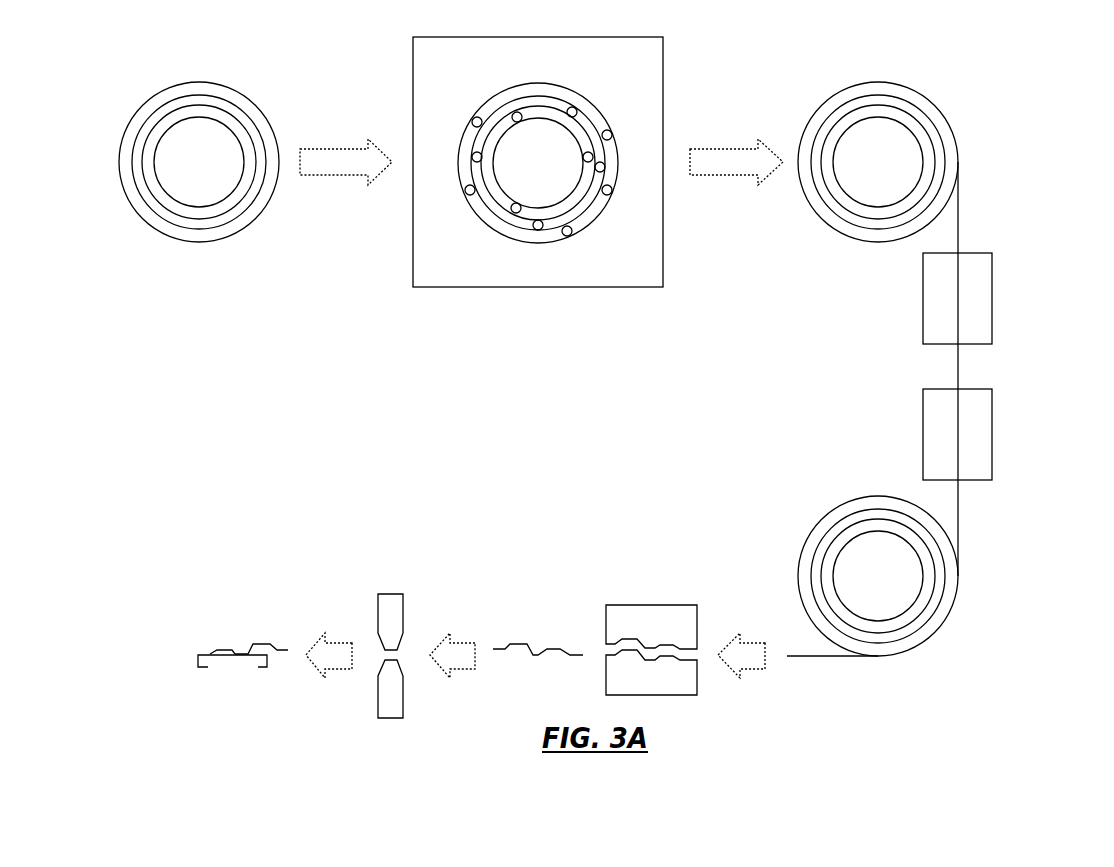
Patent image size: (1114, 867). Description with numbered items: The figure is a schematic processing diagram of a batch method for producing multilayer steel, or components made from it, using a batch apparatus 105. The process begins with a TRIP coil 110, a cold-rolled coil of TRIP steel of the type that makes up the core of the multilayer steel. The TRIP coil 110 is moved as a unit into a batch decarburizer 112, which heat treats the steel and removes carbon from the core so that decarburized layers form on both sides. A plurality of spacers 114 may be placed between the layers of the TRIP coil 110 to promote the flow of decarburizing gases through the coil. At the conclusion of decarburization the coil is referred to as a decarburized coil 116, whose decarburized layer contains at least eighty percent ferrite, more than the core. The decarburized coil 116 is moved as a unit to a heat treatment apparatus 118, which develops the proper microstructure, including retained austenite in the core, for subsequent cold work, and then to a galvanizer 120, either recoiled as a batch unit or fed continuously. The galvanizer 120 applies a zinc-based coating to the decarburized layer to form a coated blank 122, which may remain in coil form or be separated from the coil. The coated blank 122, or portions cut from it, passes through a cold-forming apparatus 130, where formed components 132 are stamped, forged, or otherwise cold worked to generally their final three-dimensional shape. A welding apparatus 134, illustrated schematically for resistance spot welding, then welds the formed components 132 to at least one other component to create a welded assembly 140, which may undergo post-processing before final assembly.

The batch apparatus 105 is at (1014, 97).
The TRIP coil 110 is at (167, 232).
The batch decarburizer 112 is at (612, 290).
The spacers 114 is at (471, 195).
The decarburized coil 116 is at (848, 235).
The heat treatment apparatus 118 is at (992, 292).
The galvanizer 120 is at (923, 445).
The coated blank 122 is at (818, 523).
The cold-forming apparatus 130 is at (634, 572).
The formed components 132 is at (537, 657).
The welding apparatus 134 is at (400, 577).
The welded assembly 140 is at (227, 652).